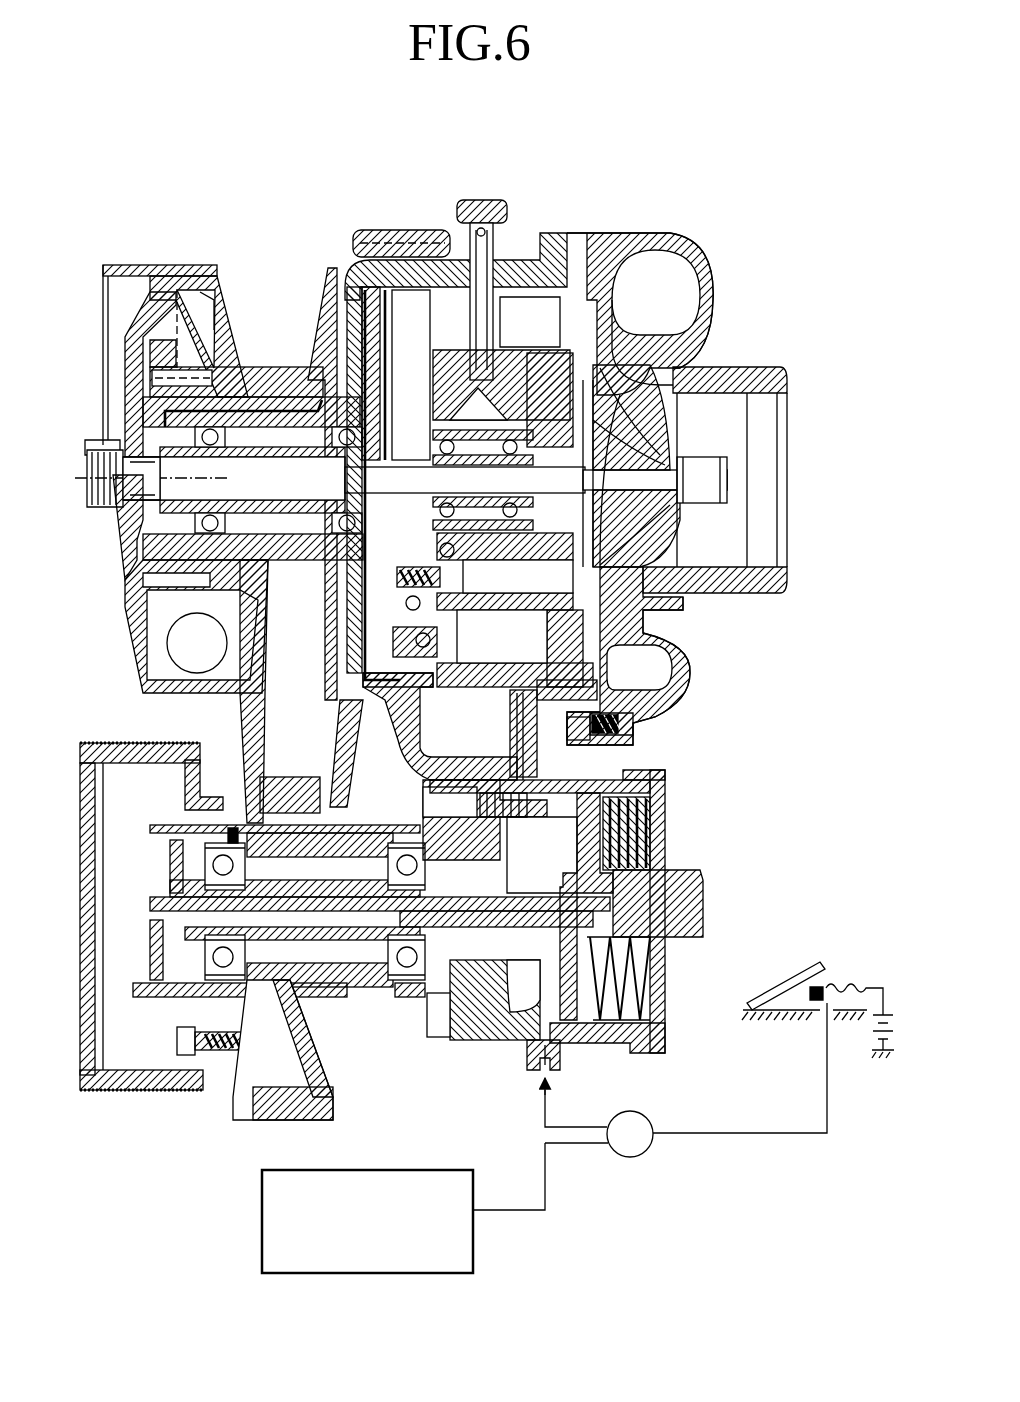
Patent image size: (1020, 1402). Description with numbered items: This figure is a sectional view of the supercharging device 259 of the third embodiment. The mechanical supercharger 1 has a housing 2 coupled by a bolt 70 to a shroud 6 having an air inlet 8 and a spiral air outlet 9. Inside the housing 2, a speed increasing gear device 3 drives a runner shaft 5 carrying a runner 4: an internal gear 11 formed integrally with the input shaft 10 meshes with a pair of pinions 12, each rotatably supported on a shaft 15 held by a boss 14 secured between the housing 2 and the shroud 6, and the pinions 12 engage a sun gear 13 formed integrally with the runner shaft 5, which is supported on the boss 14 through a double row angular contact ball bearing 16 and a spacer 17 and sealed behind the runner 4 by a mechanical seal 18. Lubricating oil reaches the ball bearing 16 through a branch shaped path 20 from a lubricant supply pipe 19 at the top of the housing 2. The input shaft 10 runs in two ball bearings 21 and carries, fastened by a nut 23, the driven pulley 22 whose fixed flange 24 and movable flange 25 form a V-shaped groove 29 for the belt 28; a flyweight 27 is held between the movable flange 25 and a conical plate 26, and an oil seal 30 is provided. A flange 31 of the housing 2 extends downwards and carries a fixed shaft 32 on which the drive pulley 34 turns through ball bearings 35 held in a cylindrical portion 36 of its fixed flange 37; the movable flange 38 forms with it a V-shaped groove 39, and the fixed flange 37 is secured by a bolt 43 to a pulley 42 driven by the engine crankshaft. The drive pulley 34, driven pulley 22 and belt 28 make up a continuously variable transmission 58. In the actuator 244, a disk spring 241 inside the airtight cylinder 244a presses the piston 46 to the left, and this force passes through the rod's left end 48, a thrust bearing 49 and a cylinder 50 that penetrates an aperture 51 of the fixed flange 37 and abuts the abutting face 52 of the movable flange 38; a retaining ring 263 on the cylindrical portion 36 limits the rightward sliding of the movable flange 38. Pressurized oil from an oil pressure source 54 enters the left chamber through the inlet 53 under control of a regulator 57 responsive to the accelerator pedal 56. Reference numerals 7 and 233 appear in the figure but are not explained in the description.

The mechanical supercharger 1 is at (728, 258).
The housing 2 is at (527, 260).
The speed increasing gear device 3 is at (418, 700).
The runner 4 is at (648, 535).
The runner shaft 5 is at (628, 443).
The shroud 6 is at (672, 240).
The clearance 7 is at (513, 748).
The air inlet 8 is at (790, 422).
The air outlet 9 is at (690, 288).
The input shaft 10 is at (285, 502).
The internal gear 11 is at (408, 300).
The pinions 12 is at (442, 600).
The sun gear 13 is at (410, 460).
The boss 14 is at (548, 612).
The shaft 15 is at (493, 612).
The double row angular contact ball bearing 16 is at (515, 425).
The spacer 17 is at (505, 571).
The mechanical seal 18 is at (600, 445).
The lubricant supply pipe 19 is at (398, 235).
The branch shaped path 20 is at (490, 410).
The ball bearings 21 is at (245, 500).
The driven pulley 22 is at (193, 262).
The nut 23 is at (110, 507).
The fixed flange 24 is at (323, 325).
The movable flange 25 is at (212, 302).
The conical plate 26 is at (150, 298).
The flyweight 27 is at (175, 648).
The belt 28 is at (268, 366).
The V-shaped groove 29 is at (240, 345).
The oil seal 30 is at (130, 560).
The flange 31 is at (455, 757).
The fixed shaft 32 is at (500, 868).
The drive pulley 34 is at (230, 1108).
The ball bearings 35 is at (170, 847).
The cylindrical portion 36 is at (280, 840).
The fixed flange 37 is at (235, 742).
The movable flange 38 is at (338, 765).
The V-shaped groove 39 is at (252, 728).
The pulley 42 is at (120, 1092).
The bolt 43 is at (178, 1040).
The piston 46 is at (560, 950).
The left end 48 is at (150, 925).
The thrust bearing 49 is at (168, 878).
The cylinder 50 is at (160, 997).
The aperture 51 is at (230, 822).
The abutting face 52 is at (277, 1015).
The inlet 53 is at (560, 1062).
The oil pressure source 54 is at (458, 1275).
The accelerator pedal 56 is at (807, 973).
The regulator 57 is at (845, 985).
The continuously variable transmission 58 is at (110, 262).
The bolt 70 is at (635, 740).
The cylinder 233 is at (440, 1040).
The disk spring 241 is at (645, 955).
The actuator 244 is at (720, 765).
The airtight cylinder 244a is at (648, 772).
The supercharging device 259 is at (712, 1155).
The retaining ring 263 is at (413, 992).